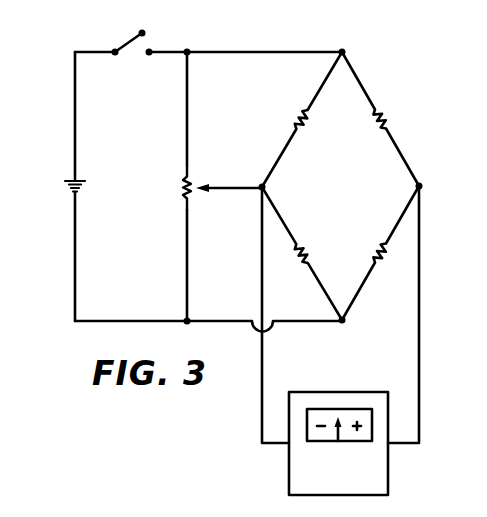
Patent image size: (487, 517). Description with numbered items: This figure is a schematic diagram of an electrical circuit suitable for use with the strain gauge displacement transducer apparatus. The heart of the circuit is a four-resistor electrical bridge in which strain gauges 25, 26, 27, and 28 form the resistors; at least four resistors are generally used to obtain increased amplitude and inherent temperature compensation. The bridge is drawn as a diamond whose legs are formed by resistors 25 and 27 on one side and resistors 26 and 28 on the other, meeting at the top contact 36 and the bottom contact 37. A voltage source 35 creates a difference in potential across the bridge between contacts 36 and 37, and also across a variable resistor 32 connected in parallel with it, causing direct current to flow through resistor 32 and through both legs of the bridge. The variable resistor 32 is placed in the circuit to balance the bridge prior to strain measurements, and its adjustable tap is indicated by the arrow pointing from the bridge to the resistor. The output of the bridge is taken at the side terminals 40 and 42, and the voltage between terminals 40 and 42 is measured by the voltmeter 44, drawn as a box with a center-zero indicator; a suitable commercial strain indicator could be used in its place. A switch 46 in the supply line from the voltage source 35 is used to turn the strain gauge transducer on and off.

The strain gauge 25 is at (295, 121).
The strain gauge 26 is at (378, 248).
The strain gauge 27 is at (299, 264).
The strain gauge 28 is at (388, 121).
The variable resistor 32 is at (184, 183).
The voltage source 35 is at (72, 179).
The contact 36 is at (344, 52).
The contact 37 is at (345, 322).
The terminal 40 is at (266, 187).
The terminal 42 is at (423, 186).
The voltmeter 44 is at (347, 480).
The switch 46 is at (130, 44).